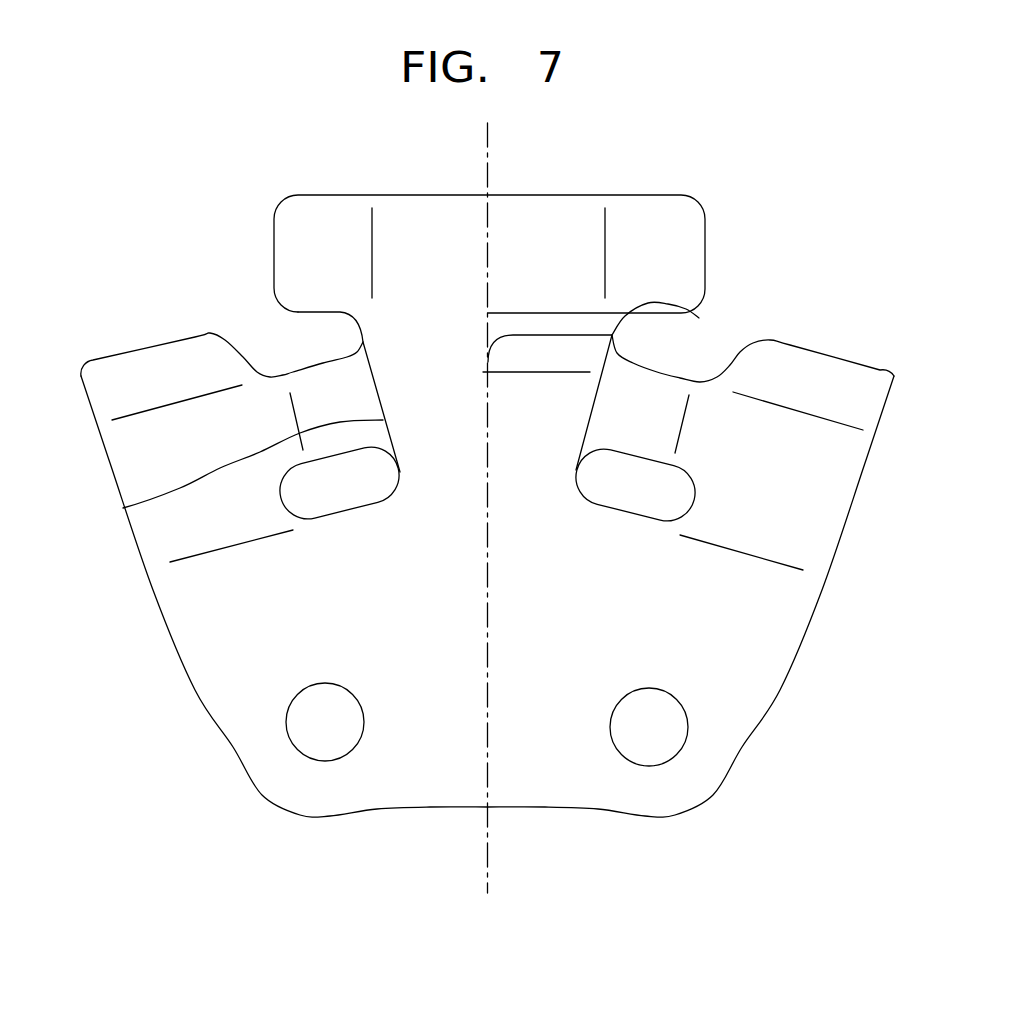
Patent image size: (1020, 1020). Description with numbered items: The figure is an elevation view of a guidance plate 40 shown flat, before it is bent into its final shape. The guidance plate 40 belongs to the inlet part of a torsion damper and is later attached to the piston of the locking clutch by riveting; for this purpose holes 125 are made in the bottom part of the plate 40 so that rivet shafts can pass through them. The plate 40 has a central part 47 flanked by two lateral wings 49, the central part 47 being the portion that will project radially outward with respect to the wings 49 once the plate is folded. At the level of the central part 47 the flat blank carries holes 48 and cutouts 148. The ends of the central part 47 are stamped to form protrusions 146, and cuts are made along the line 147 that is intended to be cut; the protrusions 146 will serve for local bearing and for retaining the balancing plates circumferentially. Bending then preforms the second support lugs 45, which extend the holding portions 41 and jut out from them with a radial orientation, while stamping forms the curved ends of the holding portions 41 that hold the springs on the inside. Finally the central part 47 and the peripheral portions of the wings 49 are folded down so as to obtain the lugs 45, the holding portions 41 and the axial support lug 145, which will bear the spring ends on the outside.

The guidance plate 40 is at (375, 813).
The holding portion 41 is at (158, 413).
The second support lug 45 is at (677, 432).
The central part 47 is at (540, 230).
The hole 48 is at (290, 512).
The lateral wing 49 is at (142, 448).
The hole 125 is at (293, 742).
The first axial support lug 145 is at (425, 227).
The protrusion 146 is at (323, 225).
The cut line 147 is at (123, 508).
The cutout 148 is at (287, 372).